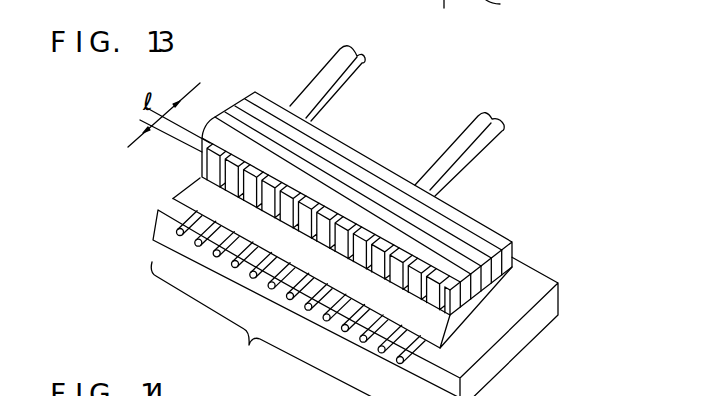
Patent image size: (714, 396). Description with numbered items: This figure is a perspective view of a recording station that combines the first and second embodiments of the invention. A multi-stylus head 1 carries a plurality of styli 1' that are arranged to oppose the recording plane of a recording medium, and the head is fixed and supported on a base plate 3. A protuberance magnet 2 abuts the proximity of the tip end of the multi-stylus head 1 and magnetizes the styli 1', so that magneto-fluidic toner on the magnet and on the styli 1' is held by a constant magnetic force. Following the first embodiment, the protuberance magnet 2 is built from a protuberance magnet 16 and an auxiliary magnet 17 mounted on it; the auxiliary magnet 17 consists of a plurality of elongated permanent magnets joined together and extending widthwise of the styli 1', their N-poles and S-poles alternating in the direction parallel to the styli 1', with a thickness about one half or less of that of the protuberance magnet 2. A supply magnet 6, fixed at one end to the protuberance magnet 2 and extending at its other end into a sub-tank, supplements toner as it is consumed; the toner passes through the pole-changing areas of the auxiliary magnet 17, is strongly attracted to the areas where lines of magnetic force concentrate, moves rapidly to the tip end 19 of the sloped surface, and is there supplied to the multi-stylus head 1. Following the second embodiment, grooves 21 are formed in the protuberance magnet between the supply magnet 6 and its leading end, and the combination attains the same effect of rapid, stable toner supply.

The multi-stylus head 1 is at (288, 303).
The styli 1' is at (333, 330).
The protuberance magnet 2 is at (548, 266).
The base plate 3 is at (538, 328).
The supply magnet 6 is at (352, 72).
The protuberance magnet 16 is at (503, 282).
The auxiliary magnet 17 is at (498, 240).
The tip end of the sloped surface 19 is at (196, 175).
The grooves 21 is at (206, 159).